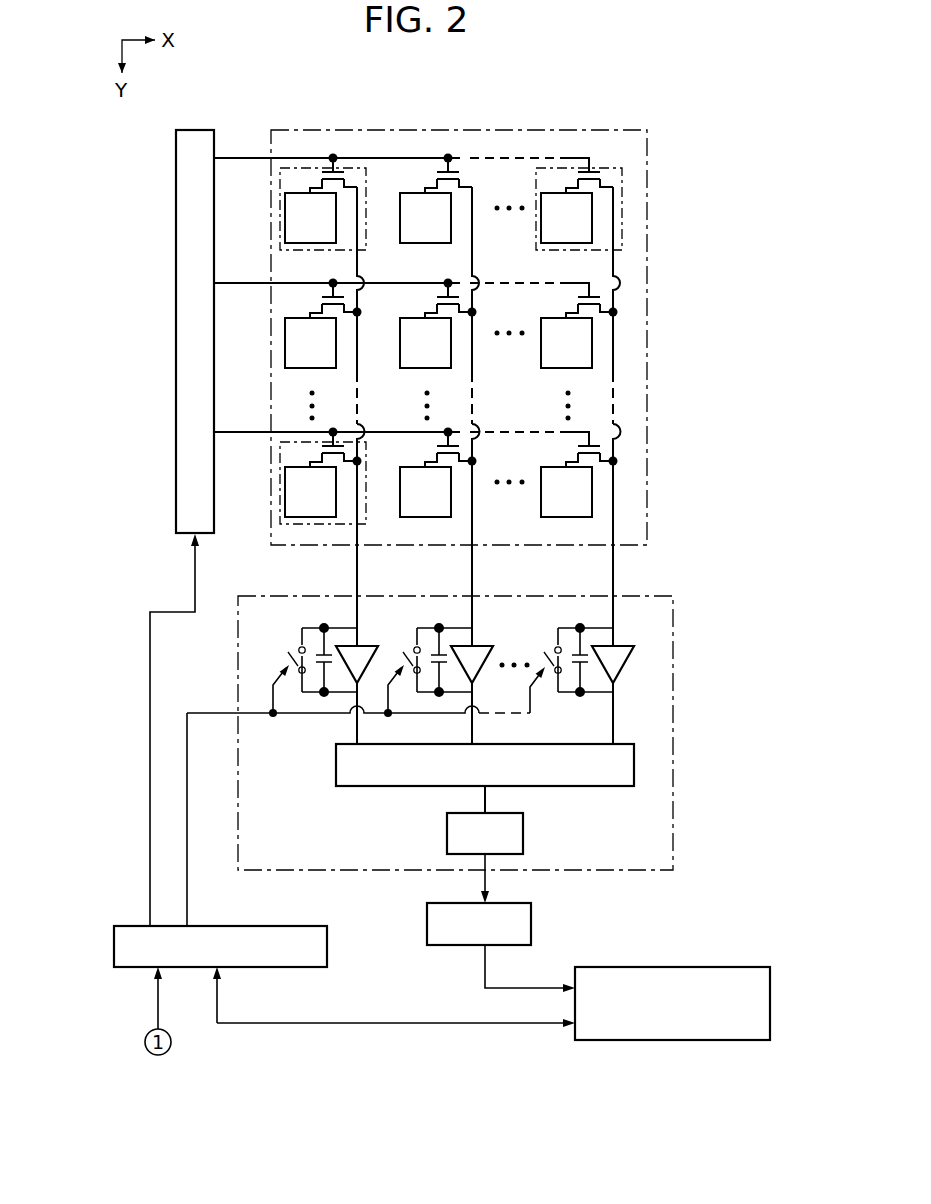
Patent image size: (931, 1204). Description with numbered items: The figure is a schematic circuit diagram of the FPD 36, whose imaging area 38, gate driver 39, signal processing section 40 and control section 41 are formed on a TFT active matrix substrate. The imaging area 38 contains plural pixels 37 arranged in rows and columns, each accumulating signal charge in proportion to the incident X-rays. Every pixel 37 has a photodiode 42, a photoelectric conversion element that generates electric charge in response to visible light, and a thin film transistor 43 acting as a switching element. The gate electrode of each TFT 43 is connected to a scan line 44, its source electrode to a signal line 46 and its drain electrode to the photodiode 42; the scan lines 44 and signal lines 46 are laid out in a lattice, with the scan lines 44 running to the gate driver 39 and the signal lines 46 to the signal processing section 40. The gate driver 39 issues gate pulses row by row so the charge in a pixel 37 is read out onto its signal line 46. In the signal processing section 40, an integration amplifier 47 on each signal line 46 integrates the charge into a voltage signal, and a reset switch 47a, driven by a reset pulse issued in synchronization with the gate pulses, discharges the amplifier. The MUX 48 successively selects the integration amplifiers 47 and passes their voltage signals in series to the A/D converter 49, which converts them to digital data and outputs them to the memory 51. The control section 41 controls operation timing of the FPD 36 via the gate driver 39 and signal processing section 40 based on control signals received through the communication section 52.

The FPD 36 is at (260, 66).
The pixel 37 is at (353, 165).
The imaging area 38 is at (577, 130).
The gate driver 39 is at (194, 129).
The signal processing section 40 is at (673, 698).
The control section 41 is at (233, 926).
The photodiode 42 is at (336, 228).
The thin film transistor 43 is at (330, 166).
The scan line 44 is at (255, 157).
The signal line 46 is at (357, 572).
The integration amplifier 47 is at (369, 633).
The reset switch 47a is at (302, 640).
The multiplexer (MUX) 48 is at (336, 765).
The A/D converter 49 is at (523, 831).
The memory 51 is at (531, 920).
The communication section 52 is at (633, 967).